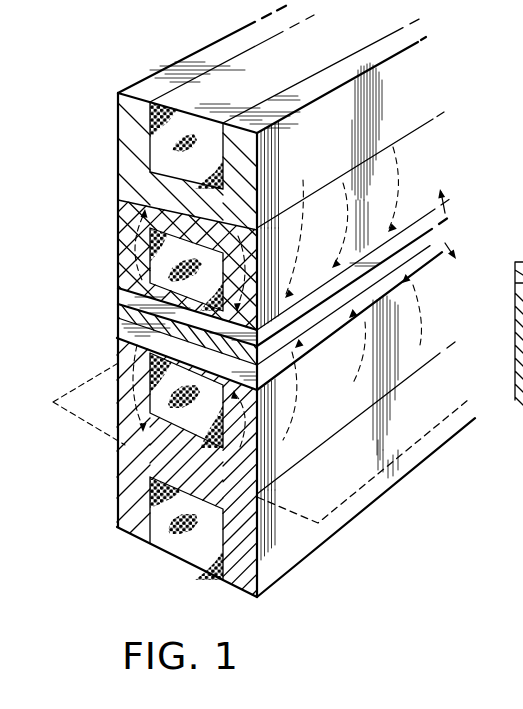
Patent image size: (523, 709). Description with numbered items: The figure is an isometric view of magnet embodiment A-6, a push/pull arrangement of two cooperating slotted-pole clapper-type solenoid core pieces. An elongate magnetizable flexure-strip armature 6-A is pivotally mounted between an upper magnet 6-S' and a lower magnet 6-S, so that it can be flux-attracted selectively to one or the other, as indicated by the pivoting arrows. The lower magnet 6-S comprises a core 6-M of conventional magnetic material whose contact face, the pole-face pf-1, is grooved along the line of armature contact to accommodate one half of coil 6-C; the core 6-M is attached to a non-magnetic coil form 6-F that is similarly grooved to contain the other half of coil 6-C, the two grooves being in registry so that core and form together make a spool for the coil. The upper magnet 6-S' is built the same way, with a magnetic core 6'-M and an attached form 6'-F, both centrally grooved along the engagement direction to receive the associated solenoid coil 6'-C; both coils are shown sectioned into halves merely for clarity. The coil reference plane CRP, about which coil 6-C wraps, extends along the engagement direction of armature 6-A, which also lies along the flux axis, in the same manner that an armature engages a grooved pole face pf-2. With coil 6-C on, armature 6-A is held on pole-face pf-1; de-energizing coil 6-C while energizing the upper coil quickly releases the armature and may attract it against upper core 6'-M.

The solenoid coil 6'-C is at (223, 168).
The coil form 6'-F is at (350, 132).
The magnetic core 6'-M is at (353, 238).
The upper magnet 6-S' is at (125, 260).
The flexure-strip armature 6-A is at (68, 283).
The pole-face pf-1 is at (136, 339).
The coil 6-C is at (150, 489).
The lower magnet 6-S is at (134, 396).
The magnet core 6-M is at (349, 371).
The coil form 6-F is at (356, 451).
The magnet embodiment A-6 is at (371, 518).
The coil reference plane CRP is at (313, 525).
The grooved pole face pf-2 is at (515, 289).